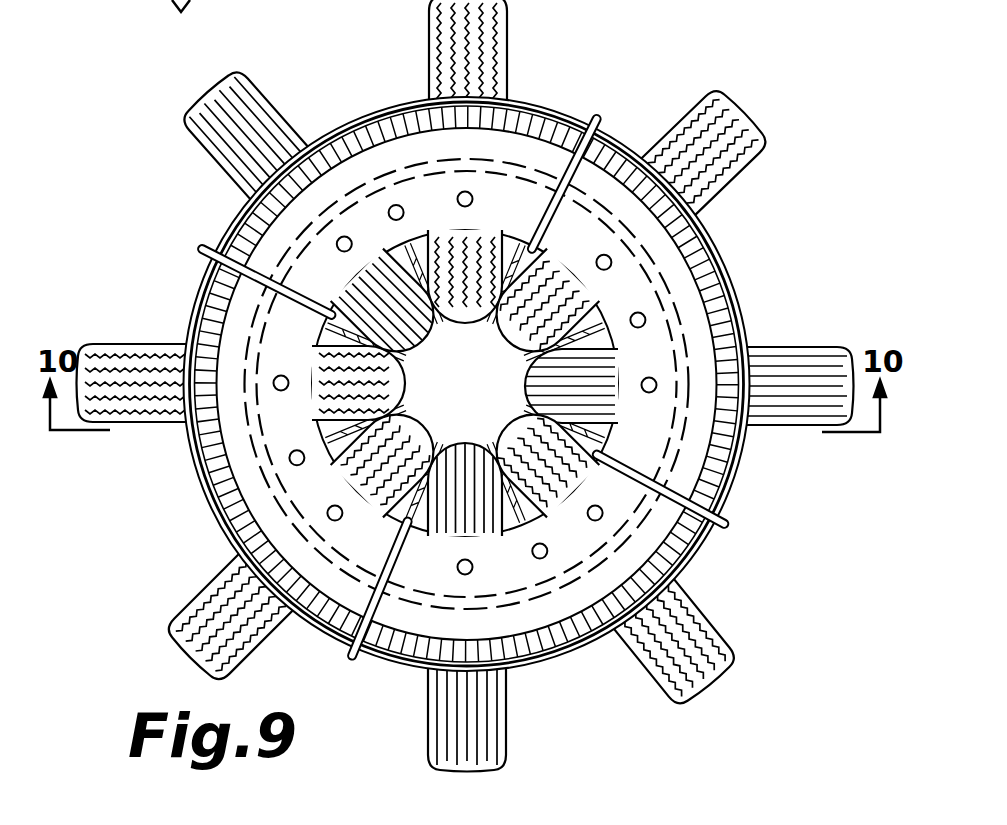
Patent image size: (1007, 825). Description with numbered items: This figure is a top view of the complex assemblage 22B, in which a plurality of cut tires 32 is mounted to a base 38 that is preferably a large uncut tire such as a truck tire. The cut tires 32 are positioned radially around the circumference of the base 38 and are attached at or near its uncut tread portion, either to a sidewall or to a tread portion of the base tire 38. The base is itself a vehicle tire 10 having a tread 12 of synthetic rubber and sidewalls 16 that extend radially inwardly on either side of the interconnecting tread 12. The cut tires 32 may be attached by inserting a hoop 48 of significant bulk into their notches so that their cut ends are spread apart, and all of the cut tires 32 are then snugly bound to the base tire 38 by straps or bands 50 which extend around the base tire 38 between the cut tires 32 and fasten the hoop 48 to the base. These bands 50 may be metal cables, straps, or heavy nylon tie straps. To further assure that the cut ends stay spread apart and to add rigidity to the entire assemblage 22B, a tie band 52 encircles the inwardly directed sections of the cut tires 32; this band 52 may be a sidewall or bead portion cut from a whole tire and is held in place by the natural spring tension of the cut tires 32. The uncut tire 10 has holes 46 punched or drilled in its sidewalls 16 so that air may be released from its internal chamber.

The vehicle tire 10 is at (507, 384).
The tread 12 is at (465, 386).
The sidewalls 16 is at (745, 462).
The assembly 22B is at (604, 112).
The cut tires 32 is at (725, 640).
The base 38 is at (640, 300).
The holes 46 is at (397, 204).
The hoop 48 is at (325, 640).
The straps or bands 50 is at (597, 118).
The tie band 52 is at (522, 378).